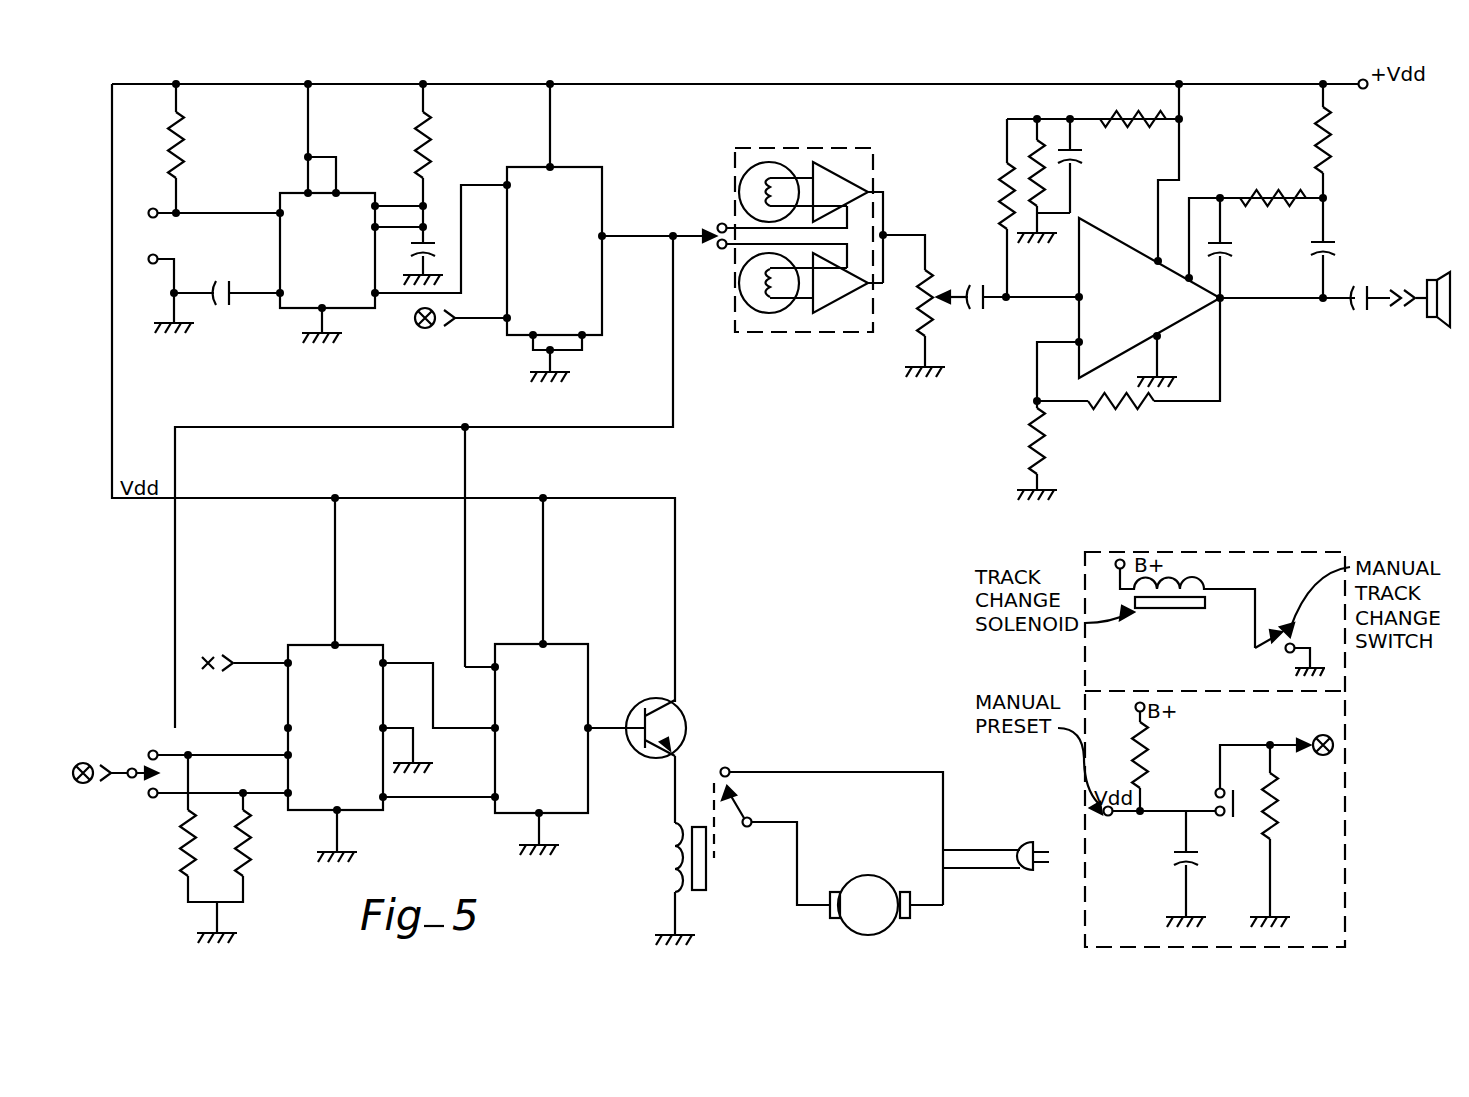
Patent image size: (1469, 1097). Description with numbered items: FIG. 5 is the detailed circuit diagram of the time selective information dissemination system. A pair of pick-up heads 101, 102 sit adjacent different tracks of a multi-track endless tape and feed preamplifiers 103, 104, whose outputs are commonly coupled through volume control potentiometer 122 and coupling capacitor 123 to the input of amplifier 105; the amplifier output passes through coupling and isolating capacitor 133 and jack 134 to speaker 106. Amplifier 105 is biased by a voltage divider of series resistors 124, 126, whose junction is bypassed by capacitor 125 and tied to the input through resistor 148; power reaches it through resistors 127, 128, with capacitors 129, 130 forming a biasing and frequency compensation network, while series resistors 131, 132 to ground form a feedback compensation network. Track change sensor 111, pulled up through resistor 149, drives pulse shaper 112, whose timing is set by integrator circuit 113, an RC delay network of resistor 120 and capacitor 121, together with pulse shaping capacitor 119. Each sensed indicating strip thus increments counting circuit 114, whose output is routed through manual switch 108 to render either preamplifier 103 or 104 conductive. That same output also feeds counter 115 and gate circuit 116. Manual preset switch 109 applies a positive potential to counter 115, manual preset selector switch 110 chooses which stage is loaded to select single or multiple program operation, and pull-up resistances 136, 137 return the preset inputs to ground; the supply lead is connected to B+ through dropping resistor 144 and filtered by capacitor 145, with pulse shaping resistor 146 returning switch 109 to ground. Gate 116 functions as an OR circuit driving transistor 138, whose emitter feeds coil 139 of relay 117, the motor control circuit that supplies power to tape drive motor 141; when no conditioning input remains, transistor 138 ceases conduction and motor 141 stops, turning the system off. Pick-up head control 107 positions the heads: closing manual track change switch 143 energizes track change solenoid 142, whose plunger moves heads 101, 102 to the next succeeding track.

The pick-up head 101 is at (754, 150).
The pick-up head 102 is at (760, 312).
The preamplifier 103 is at (860, 160).
The preamplifier 104 is at (822, 312).
The amplifier 105 is at (1180, 299).
The speaker 106 is at (1434, 270).
The pick-up head control 107 is at (1260, 552).
The manual switch 108 is at (714, 226).
The manual preset switch 109 is at (1240, 808).
The manual preset selector switch 110 is at (130, 752).
The track change sensor 111 is at (153, 241).
The pulse shaper 112 is at (393, 213).
The integrator circuit 113 is at (434, 188).
The counting circuit 114 is at (564, 233).
The counter 115 is at (350, 678).
The gate circuit 116 is at (555, 674).
The motor control circuit 117 is at (793, 764).
The pulse shaping capacitor 119 is at (222, 305).
The resistor 120 is at (437, 133).
The capacitor 121 is at (440, 250).
The volume control potentiometer 122 is at (935, 320).
The coupling capacitor 123 is at (977, 282).
The resistor 124 is at (1035, 142).
The bypass capacitor 125 is at (1083, 163).
The resistor 126 is at (1112, 128).
The resistor 127 is at (1335, 146).
The resistor 128 is at (1274, 186).
The capacitor 129 is at (1232, 255).
The capacitor 130 is at (1338, 248).
The resistor 131 is at (1050, 442).
The resistor 132 is at (1148, 408).
The coupling and isolating capacitor 133 is at (1357, 312).
The jack 134 is at (1405, 312).
The pull-up resistance 136 is at (176, 844).
The pull-up resistance 137 is at (250, 838).
The transistor 138 is at (675, 700).
The coil 139 is at (670, 856).
The tape drive motor 141 is at (870, 875).
The track change solenoid 142 is at (1172, 608).
The manual track change switch 143 is at (1272, 654).
The dropping resistor 144 is at (1150, 752).
The filter capacitor 145 is at (1198, 860).
The pulse shaping resistor 146 is at (1280, 814).
The resistor 148 is at (997, 190).
The resistor 149 is at (184, 142).